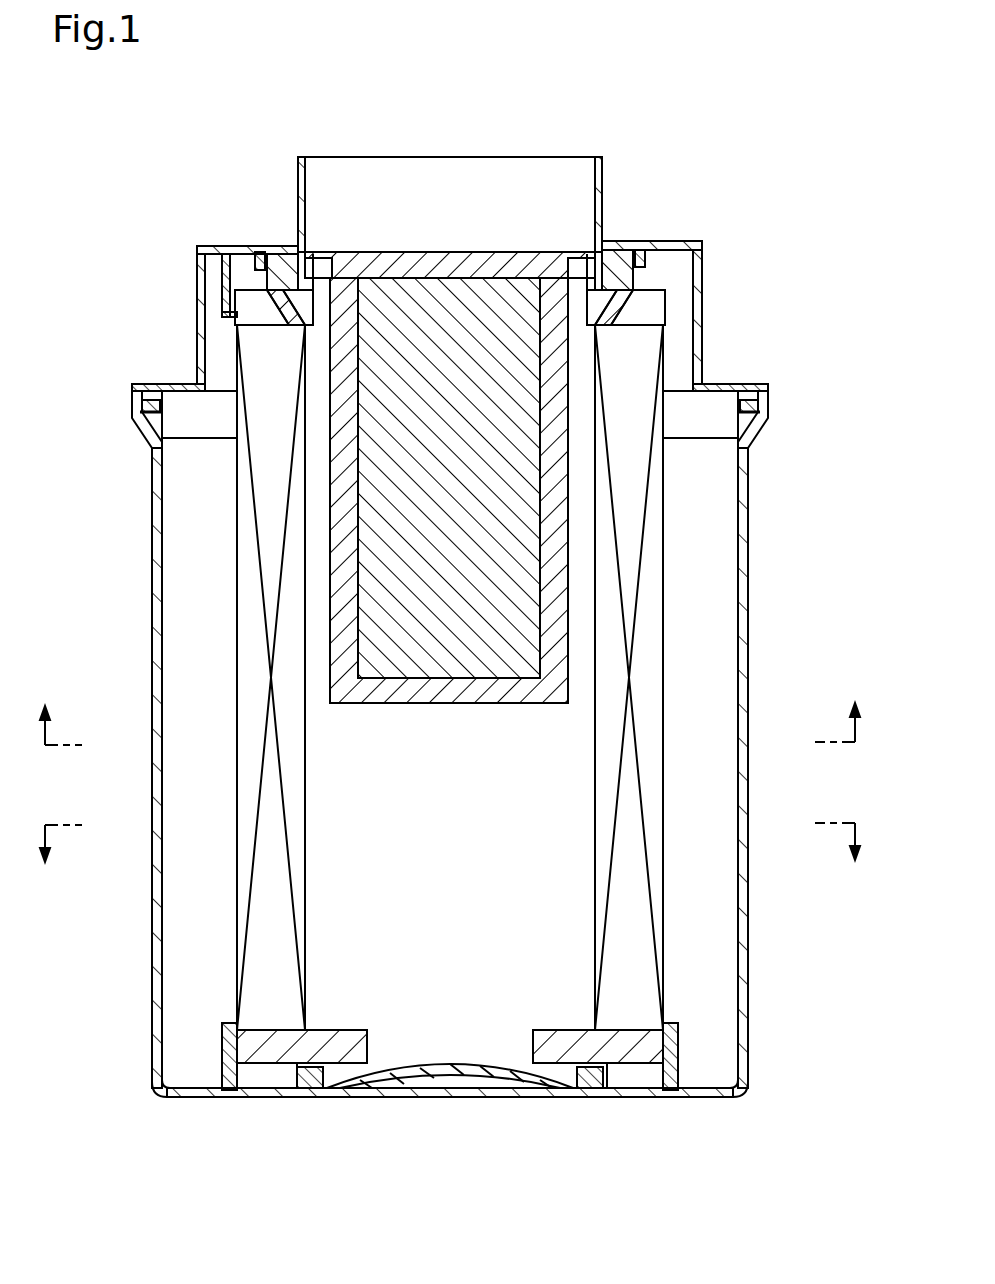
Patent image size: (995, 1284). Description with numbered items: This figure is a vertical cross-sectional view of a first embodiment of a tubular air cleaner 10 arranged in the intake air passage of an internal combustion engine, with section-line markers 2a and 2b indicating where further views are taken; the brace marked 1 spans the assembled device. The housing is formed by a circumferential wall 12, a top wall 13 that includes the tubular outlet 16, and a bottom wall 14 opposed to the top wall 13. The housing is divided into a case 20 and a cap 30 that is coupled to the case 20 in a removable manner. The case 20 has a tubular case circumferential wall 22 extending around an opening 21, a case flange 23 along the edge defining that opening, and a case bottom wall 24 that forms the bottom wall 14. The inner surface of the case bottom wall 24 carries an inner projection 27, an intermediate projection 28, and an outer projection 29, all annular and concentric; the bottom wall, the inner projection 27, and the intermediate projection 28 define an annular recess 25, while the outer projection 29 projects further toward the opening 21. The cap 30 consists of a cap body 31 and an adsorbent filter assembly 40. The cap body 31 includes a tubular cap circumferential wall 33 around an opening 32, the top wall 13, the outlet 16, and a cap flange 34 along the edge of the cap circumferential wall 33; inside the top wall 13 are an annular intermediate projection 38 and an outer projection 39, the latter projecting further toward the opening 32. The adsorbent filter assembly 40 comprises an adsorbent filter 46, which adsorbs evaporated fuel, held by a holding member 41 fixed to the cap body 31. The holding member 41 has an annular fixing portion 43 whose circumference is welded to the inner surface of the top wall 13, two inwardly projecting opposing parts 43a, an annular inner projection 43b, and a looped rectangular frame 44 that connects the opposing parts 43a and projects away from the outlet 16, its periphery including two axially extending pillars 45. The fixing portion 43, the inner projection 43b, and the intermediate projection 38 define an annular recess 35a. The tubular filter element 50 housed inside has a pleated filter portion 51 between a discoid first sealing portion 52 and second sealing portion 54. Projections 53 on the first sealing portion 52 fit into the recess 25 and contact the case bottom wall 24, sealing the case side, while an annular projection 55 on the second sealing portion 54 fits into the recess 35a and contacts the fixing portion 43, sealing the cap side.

The electromagnetic actuator 1 is at (62, 300).
The air cleaner 10 is at (737, 143).
The circumferential wall 12 is at (508, 673).
The top wall 13 is at (688, 240).
The bottom wall 14 is at (450, 1123).
The outlet 16 is at (299, 160).
The case 20 is at (150, 513).
The opening 21 is at (745, 443).
The case circumferential wall 22 is at (750, 569).
The case flange 23 is at (768, 410).
The case bottom wall 24 is at (188, 1100).
The recess 25 is at (312, 1090).
The inner projection 27 is at (337, 1082).
The intermediate projection 28 is at (277, 1070).
The outer projection 29 is at (222, 1043).
The cap 30 is at (190, 305).
The cap body 31 is at (196, 246).
The opening 32 is at (720, 400).
The cap circumferential wall 33 is at (704, 291).
The cap flange 34 is at (765, 403).
The recess 35a is at (613, 255).
The intermediate projection 38 is at (228, 264).
The outer projection 39 is at (228, 283).
The adsorbent filter assembly 40 is at (540, 104).
The holding member 41 is at (479, 250).
The fixing portion 43 is at (632, 255).
The opposing parts 43a is at (322, 252).
The inner projection 43b is at (287, 273).
The frame 44 is at (441, 251).
The pillars 45 is at (328, 660).
The adsorbent filter 46 is at (508, 303).
The filter element 50 is at (233, 930).
The filter portion 51 is at (237, 893).
The first sealing portion 52 is at (258, 1080).
The projections 53 is at (300, 1082).
The second sealing portion 54 is at (248, 308).
The annular projection 55 is at (259, 252).
The section line 2a is at (450, 859).
The section line 2b is at (450, 711).